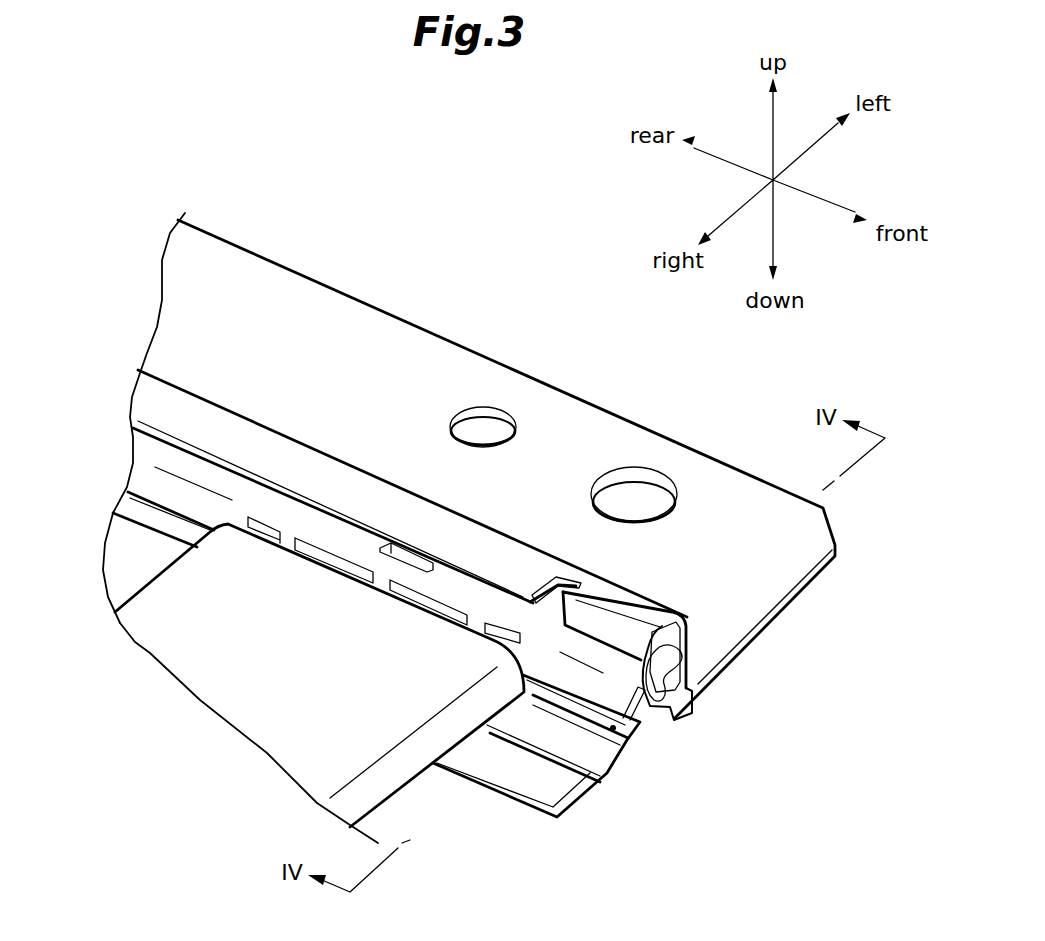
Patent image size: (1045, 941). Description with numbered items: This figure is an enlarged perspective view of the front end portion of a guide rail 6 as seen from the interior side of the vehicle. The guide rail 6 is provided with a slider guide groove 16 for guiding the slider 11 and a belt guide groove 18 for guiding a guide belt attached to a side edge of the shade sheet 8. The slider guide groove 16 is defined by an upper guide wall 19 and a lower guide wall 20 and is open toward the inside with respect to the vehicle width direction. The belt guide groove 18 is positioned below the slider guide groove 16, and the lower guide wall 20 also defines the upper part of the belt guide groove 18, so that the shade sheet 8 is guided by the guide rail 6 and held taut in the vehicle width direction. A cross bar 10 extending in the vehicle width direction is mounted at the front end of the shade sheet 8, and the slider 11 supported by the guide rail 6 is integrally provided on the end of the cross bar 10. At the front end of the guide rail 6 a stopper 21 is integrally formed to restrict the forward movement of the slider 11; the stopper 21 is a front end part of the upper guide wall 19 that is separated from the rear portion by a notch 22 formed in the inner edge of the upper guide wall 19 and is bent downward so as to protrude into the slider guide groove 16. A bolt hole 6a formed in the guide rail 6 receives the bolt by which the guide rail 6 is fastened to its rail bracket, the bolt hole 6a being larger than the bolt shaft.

The guide rail 6 is at (705, 673).
The bolt hole 6a is at (480, 420).
The shade sheet 8 is at (123, 555).
The cross bar 10 is at (197, 673).
The slider 11 is at (306, 522).
The slider guide groove 16 is at (167, 447).
The belt guide groove 18 is at (615, 729).
The upper guide wall 19 is at (142, 385).
The lower guide wall 20 is at (145, 487).
The stopper 21 is at (643, 716).
The notch 22 is at (540, 593).